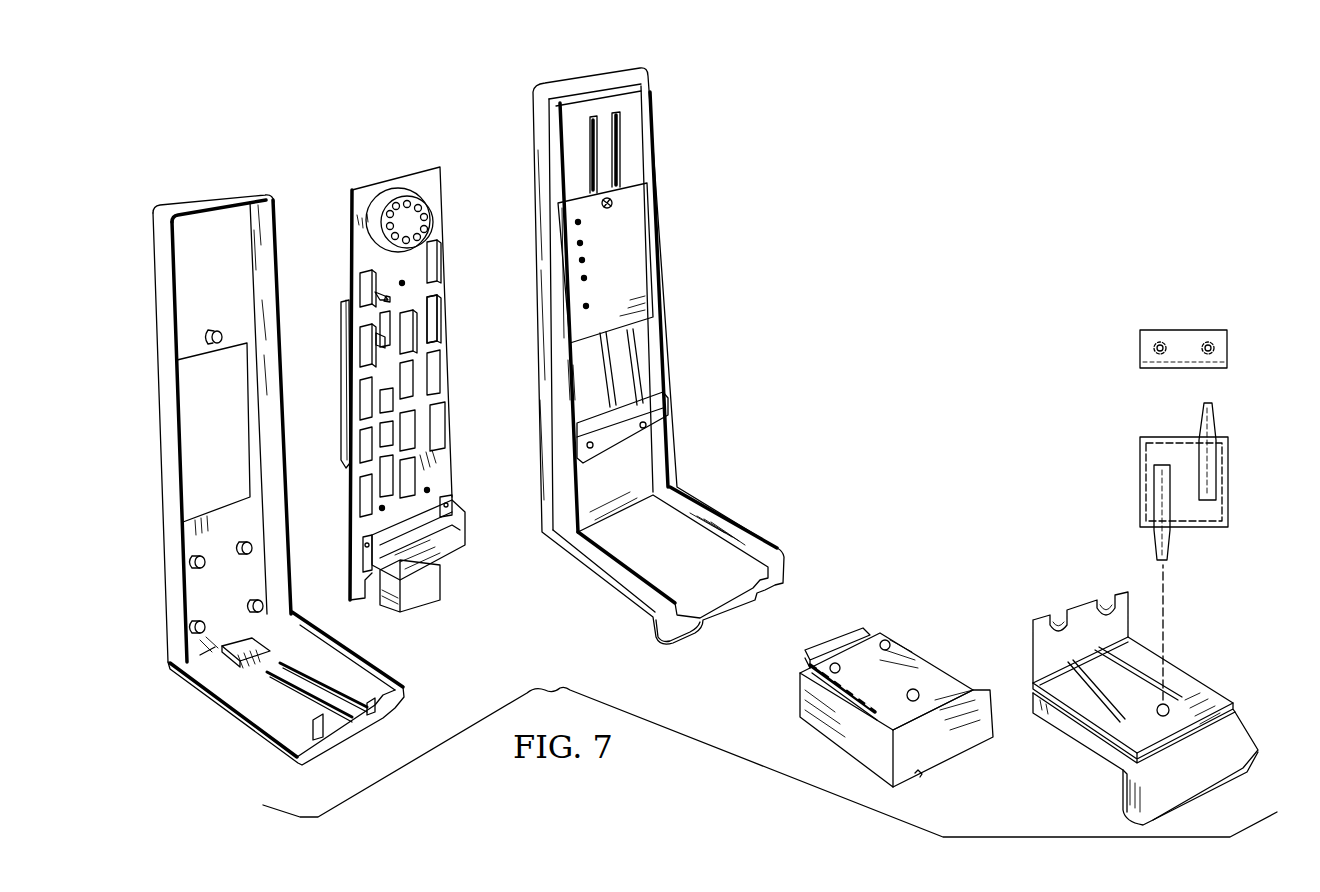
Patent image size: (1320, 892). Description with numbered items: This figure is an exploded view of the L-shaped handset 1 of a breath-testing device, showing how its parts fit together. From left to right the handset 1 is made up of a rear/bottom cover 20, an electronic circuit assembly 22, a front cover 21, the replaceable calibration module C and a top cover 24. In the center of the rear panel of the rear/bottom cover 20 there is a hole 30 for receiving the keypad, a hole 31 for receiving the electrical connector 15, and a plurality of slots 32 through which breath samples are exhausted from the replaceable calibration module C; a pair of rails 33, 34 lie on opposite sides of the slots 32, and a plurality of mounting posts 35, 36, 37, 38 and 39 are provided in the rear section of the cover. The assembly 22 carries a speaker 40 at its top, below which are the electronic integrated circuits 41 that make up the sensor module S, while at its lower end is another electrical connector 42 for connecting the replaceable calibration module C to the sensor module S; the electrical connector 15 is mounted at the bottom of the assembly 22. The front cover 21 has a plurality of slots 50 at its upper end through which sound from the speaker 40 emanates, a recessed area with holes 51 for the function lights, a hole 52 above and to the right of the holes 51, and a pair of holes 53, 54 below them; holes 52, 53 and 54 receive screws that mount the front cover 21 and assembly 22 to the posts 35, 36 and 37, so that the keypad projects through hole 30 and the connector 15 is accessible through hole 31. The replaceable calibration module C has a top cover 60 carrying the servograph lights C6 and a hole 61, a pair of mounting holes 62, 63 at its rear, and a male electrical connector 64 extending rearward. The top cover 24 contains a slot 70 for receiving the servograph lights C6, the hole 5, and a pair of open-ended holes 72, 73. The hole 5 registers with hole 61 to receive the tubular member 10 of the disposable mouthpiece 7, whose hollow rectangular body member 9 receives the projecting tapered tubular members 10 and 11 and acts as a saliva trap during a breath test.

The handset 1 is at (692, 317).
The hole 5 is at (1150, 733).
The disposable mouthpiece 7 is at (1180, 323).
The body member 9 is at (1228, 510).
The tapered tubular member 10 is at (1160, 355).
The tapered tubular member 11 is at (1208, 348).
The electrical connector 15 is at (432, 605).
The rear/bottom cover 20 is at (155, 632).
The front cover 21 is at (682, 395).
The electronic circuit assembly 22 is at (363, 186).
The top cover 24 is at (1182, 663).
The hole 30 is at (195, 460).
The hole 31 is at (243, 663).
The slots 32 is at (383, 720).
The rail 33 is at (310, 737).
The rail 34 is at (370, 682).
The mounting post 35 is at (218, 340).
The mounting post 36 is at (193, 556).
The mounting post 37 is at (247, 540).
The mounting post 38 is at (192, 620).
The mounting post 39 is at (262, 600).
The speaker 40 is at (417, 185).
The electronic integrated circuits 41 is at (440, 303).
The electrical connector 42 is at (465, 524).
The slots 50 is at (597, 145).
The holes 51 is at (600, 257).
The hole 52 is at (380, 287).
The hole 53 is at (340, 400).
The hole 54 is at (645, 426).
The top cover 60 is at (942, 690).
The hole 61 is at (913, 700).
The mounting hole 62 is at (835, 668).
The mounting hole 63 is at (885, 645).
The male electrical connector 64 is at (843, 640).
The slot 70 is at (1097, 713).
The open-ended hole 72 is at (1055, 613).
The open-ended hole 73 is at (1100, 597).
The replaceable calibration module C is at (927, 642).
The servograph lights C6 is at (825, 693).
The sensor module S is at (345, 178).